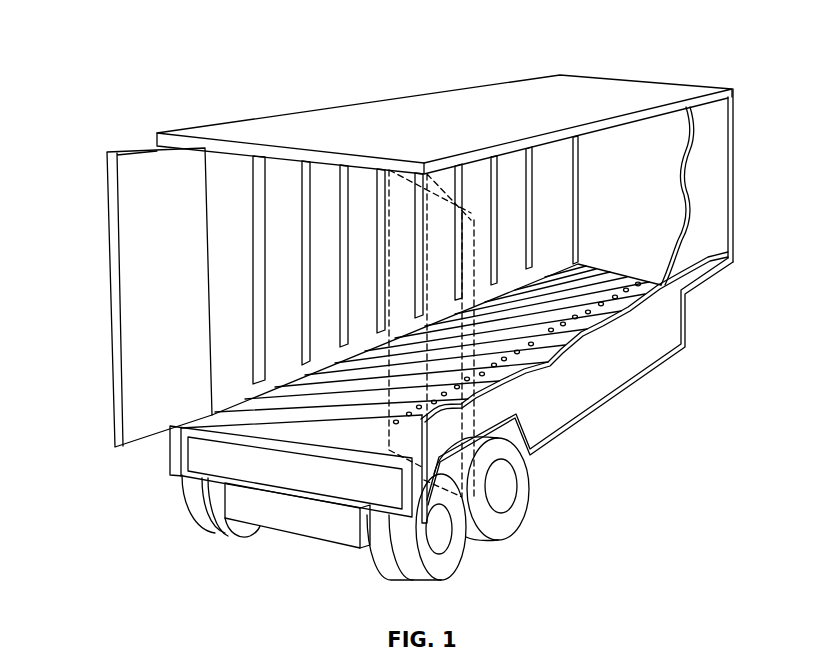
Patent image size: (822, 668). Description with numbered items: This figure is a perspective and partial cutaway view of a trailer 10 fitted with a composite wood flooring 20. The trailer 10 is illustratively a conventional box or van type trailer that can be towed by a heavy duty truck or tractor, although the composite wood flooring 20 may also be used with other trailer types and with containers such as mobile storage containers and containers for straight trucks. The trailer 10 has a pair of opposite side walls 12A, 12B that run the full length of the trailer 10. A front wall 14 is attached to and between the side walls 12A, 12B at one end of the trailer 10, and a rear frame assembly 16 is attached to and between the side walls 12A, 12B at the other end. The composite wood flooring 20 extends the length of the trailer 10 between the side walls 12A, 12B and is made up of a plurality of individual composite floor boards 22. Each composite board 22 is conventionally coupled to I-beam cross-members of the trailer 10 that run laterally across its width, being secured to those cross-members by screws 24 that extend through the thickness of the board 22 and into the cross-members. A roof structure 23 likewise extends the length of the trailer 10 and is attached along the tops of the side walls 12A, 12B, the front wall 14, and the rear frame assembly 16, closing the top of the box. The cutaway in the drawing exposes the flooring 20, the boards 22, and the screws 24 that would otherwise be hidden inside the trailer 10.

The trailer 10 is at (100, 58).
The side wall 12A is at (225, 173).
The side wall 12B is at (665, 340).
The front wall 14 is at (668, 173).
The rear frame assembly 16 is at (139, 340).
The composite wood flooring 20 is at (347, 414).
The composite floor board 22 is at (731, 253).
The roof structure 23 is at (469, 100).
The screw 24 is at (519, 357).